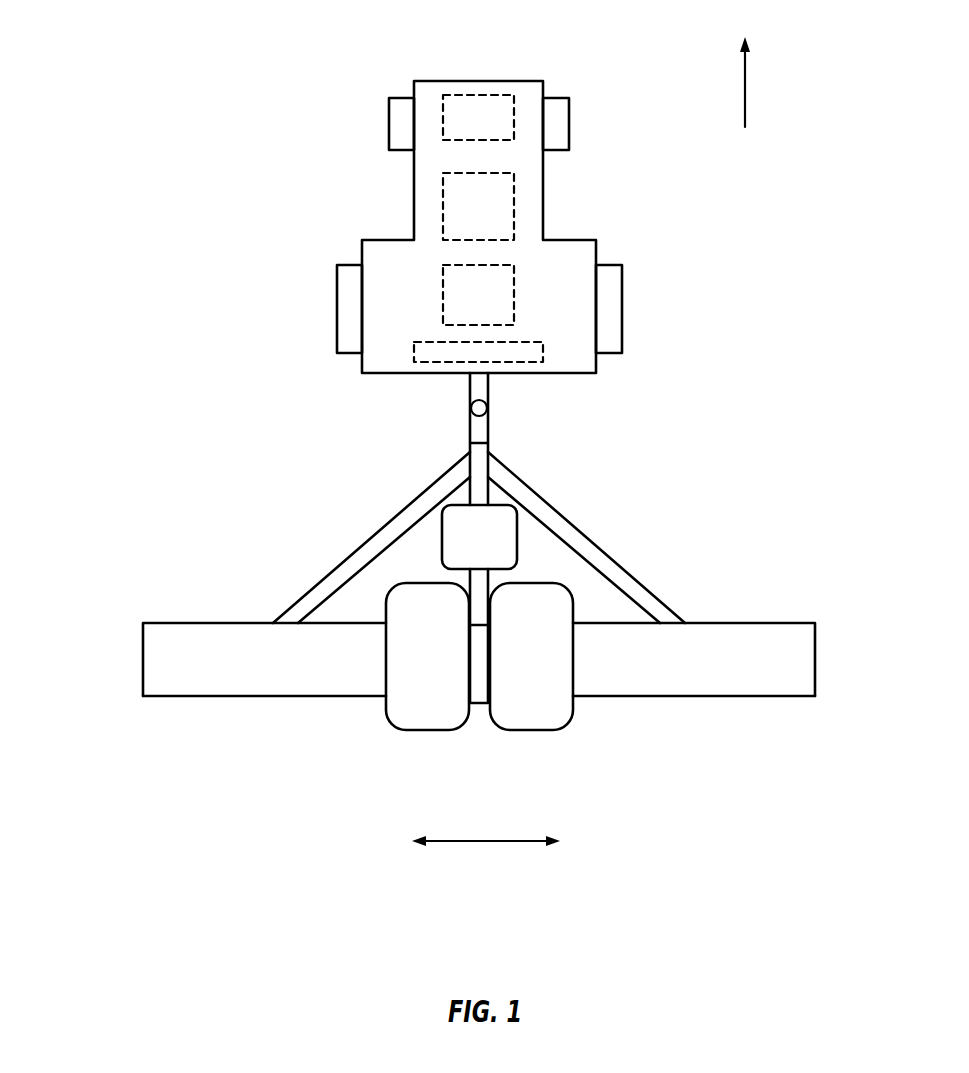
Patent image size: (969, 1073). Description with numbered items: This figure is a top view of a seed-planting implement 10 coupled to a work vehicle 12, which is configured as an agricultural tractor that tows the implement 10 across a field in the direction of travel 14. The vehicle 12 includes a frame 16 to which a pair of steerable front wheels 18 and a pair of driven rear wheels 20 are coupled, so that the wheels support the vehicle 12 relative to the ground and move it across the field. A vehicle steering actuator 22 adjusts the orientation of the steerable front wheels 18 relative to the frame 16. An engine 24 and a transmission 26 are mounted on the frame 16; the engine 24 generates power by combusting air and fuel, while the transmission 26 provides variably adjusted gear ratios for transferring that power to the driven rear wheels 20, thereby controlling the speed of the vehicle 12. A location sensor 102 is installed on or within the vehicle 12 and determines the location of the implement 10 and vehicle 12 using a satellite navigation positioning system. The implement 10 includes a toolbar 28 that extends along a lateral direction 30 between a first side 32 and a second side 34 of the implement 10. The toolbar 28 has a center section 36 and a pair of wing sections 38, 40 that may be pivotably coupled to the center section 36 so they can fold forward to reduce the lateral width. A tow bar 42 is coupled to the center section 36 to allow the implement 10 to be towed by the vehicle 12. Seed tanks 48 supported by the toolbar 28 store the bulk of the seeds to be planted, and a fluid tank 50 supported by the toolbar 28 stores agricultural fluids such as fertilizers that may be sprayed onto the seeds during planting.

The seed-planting implement 10 is at (76, 488).
The work vehicle 12 is at (216, 120).
The direction of travel 14 is at (745, 89).
The frame 16 is at (414, 196).
The steerable front wheels 18 is at (389, 125).
The driven rear wheels 20 is at (337, 308).
The vehicle steering actuator 22 is at (468, 93).
The engine 24 is at (514, 190).
The transmission 26 is at (514, 275).
The toolbar 28 is at (332, 705).
The lateral direction 30 is at (487, 843).
The first side 32 is at (118, 670).
The second side 34 is at (848, 670).
The center section 36 is at (488, 492).
The wing section 38 is at (207, 697).
The wing section 40 is at (665, 697).
The tow bar 42 is at (488, 427).
The seed tanks 48 is at (430, 731).
The fluid tank 50 is at (517, 543).
The location sensor 102 is at (433, 363).